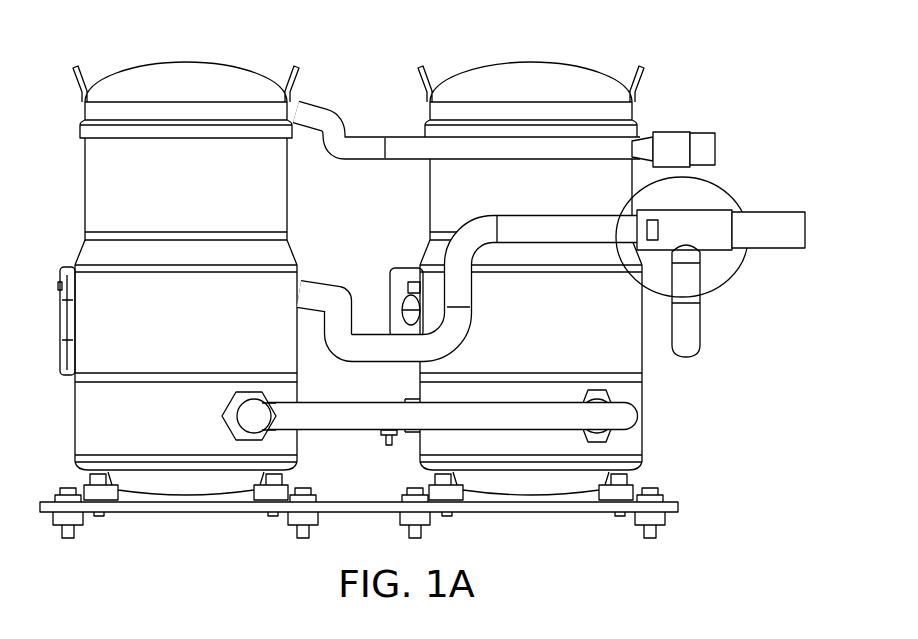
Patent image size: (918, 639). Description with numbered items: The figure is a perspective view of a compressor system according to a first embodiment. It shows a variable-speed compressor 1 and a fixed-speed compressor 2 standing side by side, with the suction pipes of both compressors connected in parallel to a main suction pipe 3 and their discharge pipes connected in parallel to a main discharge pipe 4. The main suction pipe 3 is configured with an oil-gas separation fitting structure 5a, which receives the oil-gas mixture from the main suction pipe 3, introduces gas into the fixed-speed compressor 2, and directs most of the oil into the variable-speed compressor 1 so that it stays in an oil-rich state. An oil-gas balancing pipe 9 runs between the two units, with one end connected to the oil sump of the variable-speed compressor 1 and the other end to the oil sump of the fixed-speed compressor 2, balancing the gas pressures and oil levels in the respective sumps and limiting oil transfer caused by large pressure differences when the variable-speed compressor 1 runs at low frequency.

The variable-speed compressor 1 is at (480, 77).
The fixed-speed compressor 2 is at (117, 80).
The main suction pipe 3 is at (773, 242).
The main discharge pipe 4 is at (707, 152).
The oil-gas separation fitting structure 5a is at (715, 275).
The oil-gas balancing pipe 9 is at (620, 418).